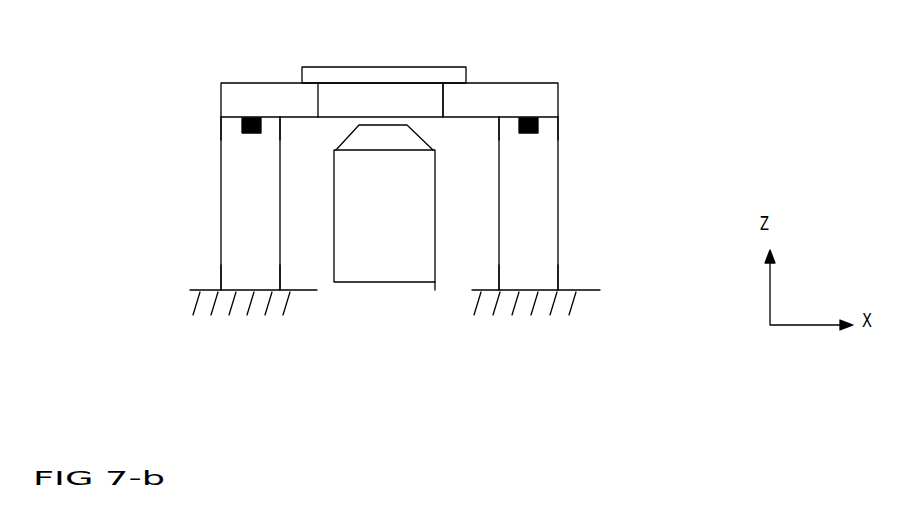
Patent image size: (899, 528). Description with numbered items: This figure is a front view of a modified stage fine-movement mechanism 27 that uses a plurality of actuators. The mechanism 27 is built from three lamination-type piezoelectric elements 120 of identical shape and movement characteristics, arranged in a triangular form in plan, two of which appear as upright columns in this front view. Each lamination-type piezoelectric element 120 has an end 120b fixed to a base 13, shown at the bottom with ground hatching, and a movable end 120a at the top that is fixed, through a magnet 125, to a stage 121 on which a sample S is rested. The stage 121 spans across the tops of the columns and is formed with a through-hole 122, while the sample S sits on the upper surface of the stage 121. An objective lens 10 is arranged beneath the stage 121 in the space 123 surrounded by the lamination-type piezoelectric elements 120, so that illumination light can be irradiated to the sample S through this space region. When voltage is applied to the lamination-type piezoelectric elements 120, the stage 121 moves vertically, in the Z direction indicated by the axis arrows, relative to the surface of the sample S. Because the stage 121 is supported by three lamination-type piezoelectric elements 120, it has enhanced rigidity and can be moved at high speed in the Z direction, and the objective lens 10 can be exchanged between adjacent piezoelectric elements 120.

The stage fine-movement mechanism 27 is at (700, 137).
The through-hole 122 is at (330, 90).
The stage 121 is at (517, 97).
The sample S is at (423, 78).
The magnet 125 is at (240, 123).
The lamination-type piezoelectric element 120 is at (243, 172).
The movable end 120a is at (232, 133).
The end 120b is at (235, 280).
The objective lens 10 is at (360, 182).
The space 123 is at (465, 225).
The base 13 is at (227, 297).